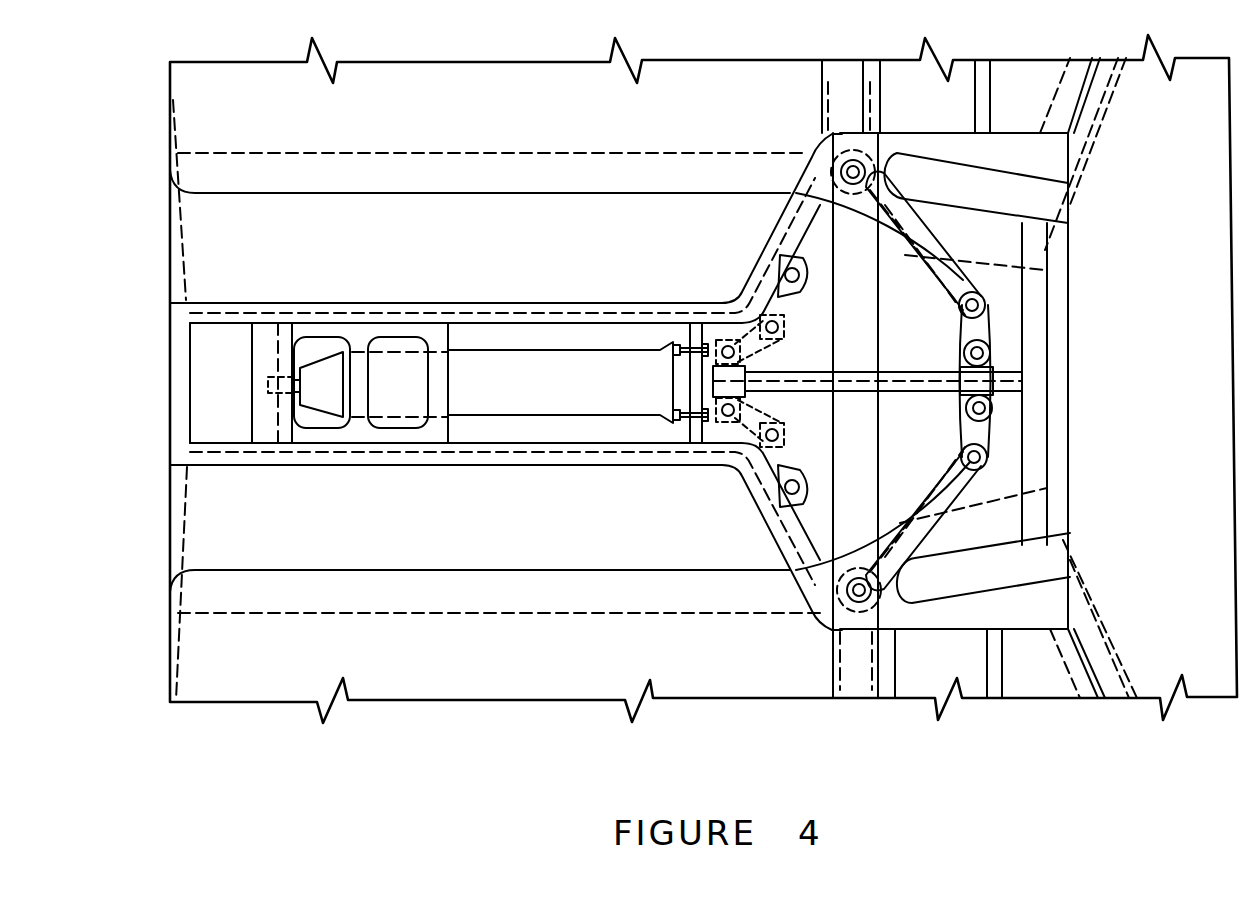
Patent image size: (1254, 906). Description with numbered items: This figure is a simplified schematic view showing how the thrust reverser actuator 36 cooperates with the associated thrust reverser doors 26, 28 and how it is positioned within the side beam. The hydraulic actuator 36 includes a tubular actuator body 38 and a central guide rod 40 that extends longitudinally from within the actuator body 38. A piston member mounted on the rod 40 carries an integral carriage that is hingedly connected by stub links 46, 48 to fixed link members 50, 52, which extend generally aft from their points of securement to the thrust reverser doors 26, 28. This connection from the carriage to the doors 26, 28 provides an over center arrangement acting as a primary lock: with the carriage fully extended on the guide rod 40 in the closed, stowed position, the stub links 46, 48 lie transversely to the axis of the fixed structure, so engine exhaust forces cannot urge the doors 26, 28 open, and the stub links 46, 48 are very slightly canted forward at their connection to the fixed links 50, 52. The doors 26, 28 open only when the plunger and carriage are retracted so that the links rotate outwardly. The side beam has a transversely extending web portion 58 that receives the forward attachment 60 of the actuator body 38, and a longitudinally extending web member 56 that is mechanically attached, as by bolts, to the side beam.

The thrust reverser door 26 is at (266, 194).
The thrust reverser door 28 is at (272, 573).
The hydraulic actuator 36 is at (600, 394).
The tubular actuator body 38 is at (512, 350).
The central guide rod 40 is at (812, 372).
The stub link 46 is at (990, 330).
The stub link 48 is at (990, 426).
The fixed link member 50 is at (913, 268).
The fixed link member 52 is at (920, 492).
The longitudinally extending web member 56 is at (448, 380).
The transversely extending web portion 58 is at (278, 358).
The forward attachment 60 is at (270, 392).